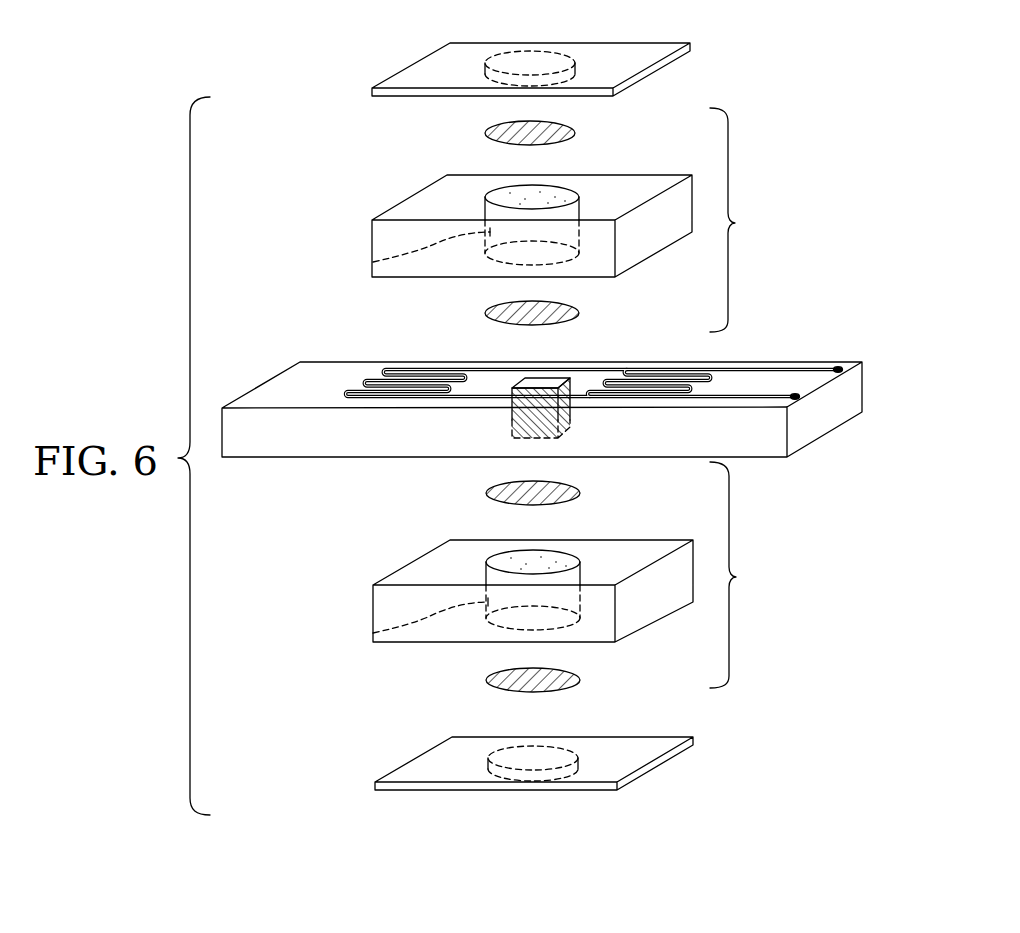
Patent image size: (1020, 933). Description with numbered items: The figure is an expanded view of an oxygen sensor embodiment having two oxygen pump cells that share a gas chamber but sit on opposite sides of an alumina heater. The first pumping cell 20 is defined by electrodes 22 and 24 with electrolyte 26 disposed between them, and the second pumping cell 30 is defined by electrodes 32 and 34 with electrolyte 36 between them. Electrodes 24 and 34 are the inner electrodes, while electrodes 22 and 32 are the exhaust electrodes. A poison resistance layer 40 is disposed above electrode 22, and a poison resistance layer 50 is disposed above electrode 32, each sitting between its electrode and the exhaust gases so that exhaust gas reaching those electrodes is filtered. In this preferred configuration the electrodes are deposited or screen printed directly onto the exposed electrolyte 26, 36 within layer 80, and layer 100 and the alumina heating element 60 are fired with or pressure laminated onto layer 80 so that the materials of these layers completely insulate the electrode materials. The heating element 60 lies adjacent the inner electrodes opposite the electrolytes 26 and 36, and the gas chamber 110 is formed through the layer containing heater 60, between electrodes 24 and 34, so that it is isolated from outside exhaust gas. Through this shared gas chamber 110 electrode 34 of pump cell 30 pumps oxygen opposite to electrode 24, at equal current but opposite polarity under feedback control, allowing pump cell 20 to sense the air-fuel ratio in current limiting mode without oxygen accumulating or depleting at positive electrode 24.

The pumping cell 20 is at (742, 220).
The electrode 22 is at (513, 128).
The electrode 24 is at (513, 312).
The electrolyte 26 is at (373, 262).
The pumping cell 30 is at (742, 575).
The electrode 32 is at (513, 680).
The electrode 34 is at (513, 495).
The electrolyte 36 is at (373, 633).
The poison resistance layer 40 is at (528, 62).
The poison resistance layer 50 is at (517, 760).
The alumina heating element 60 is at (740, 437).
The layer 80 is at (623, 209).
The layer 100 is at (629, 71).
The gas chamber 110 is at (512, 418).